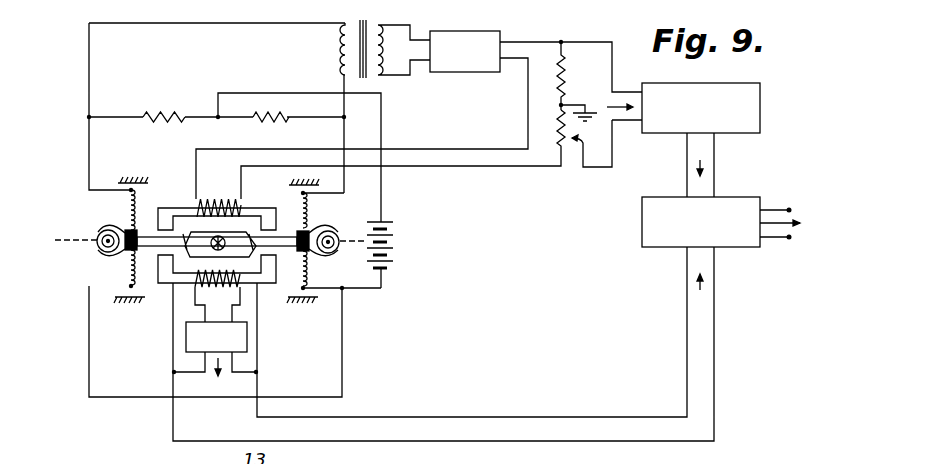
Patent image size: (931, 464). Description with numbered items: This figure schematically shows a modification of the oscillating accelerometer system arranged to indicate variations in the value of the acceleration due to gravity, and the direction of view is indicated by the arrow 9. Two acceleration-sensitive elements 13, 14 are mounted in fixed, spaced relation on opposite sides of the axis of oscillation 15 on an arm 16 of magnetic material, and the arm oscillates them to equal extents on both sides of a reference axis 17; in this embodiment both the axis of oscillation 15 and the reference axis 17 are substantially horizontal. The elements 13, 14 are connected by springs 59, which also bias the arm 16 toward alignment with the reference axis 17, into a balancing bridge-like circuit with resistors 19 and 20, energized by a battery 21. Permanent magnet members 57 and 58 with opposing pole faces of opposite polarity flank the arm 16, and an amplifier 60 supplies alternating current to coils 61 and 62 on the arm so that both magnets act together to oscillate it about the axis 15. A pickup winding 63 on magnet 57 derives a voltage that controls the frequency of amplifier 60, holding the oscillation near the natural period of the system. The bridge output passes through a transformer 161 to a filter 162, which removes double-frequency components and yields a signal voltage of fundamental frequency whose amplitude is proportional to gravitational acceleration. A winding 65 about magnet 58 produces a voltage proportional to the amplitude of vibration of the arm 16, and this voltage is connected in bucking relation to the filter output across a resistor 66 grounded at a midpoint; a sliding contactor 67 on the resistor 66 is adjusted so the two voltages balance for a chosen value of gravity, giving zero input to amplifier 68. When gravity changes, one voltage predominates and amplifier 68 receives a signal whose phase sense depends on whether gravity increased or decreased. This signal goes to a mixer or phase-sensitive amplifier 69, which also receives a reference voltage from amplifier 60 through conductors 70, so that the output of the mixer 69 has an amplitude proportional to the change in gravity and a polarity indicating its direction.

The viewing direction arrow 9 is at (62, 288).
The acceleration-sensitive element 13 is at (105, 250).
The acceleration-sensitive element 14 is at (333, 255).
The axis of oscillation 15 is at (216, 236).
The arm 16 is at (138, 233).
The reference axis 17 is at (74, 240).
The resistor 19 is at (164, 112).
The resistor 20 is at (280, 121).
The battery 21 is at (398, 244).
The permanent magnet member 57 is at (266, 282).
The permanent magnet member 58 is at (297, 228).
The spring 59 is at (126, 211).
The amplifier 60 is at (248, 352).
The coil 61 is at (192, 205).
The coil 62 is at (250, 231).
The pickup winding 63 is at (206, 284).
The winding 65 is at (215, 205).
The resistor 66 is at (567, 85).
The sliding contactor 67 is at (576, 148).
The amplifier 68 is at (762, 97).
The mixer 69 is at (655, 237).
The conductors 70 is at (600, 444).
The transformer 161 is at (362, 26).
The filter 162 is at (485, 22).